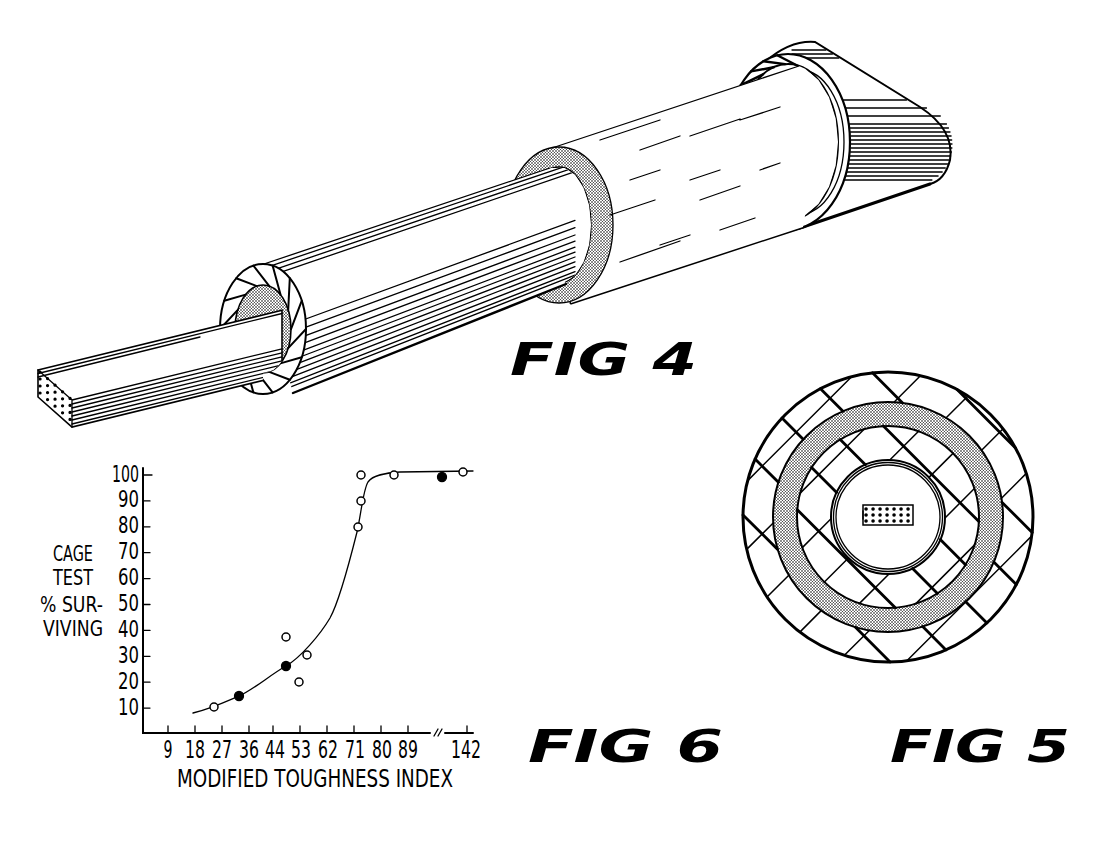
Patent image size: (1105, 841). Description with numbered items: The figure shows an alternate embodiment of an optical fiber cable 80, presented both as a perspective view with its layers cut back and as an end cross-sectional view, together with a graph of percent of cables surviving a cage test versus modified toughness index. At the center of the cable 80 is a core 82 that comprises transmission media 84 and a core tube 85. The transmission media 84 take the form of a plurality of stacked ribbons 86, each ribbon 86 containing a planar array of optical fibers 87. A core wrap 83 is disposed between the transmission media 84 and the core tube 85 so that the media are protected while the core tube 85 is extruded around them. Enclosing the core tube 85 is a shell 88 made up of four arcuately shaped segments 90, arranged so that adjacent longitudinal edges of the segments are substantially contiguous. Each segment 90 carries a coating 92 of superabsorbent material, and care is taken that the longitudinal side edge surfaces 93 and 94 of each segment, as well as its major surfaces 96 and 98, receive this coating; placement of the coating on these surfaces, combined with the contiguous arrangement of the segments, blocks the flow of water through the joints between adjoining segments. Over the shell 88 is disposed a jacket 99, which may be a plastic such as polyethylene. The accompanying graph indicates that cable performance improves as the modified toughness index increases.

In FIG. 4, the cable 80 is at (495, 250).
In FIG. 5, the cable 80 is at (891, 496).
In FIG. 4, the core 82 is at (252, 357).
In FIG. 5, the core 82 is at (875, 517).
In FIG. 4, the core wrap 83 is at (269, 346).
In FIG. 5, the core wrap 83 is at (884, 513).
In FIG. 4, the transmission media 84 is at (160, 359).
In FIG. 5, the transmission media 84 is at (888, 532).
In FIG. 4, the core tube 85 is at (263, 297).
In FIG. 5, the core tube 85 is at (888, 517).
In FIG. 4, the ribbon 86 is at (177, 399).
In FIG. 5, the ribbon 86 is at (889, 497).
In FIG. 4, the optical fibers 87 is at (55, 415).
In FIG. 5, the optical fibers 87 is at (870, 496).
In FIG. 4, the shell 88 is at (761, 172).
In FIG. 5, the shell 88 is at (887, 496).
In FIG. 4, the arcuately shaped segment 90 is at (695, 189).
In FIG. 5, the arcuately shaped segment 90 is at (889, 511).
In FIG. 4, the coating 92 is at (791, 142).
In FIG. 5, the coating 92 is at (863, 517).
In FIG. 4, the longitudinal side edge surface 93 is at (439, 275).
In FIG. 5, the longitudinal side edge surface 93 is at (887, 495).
In FIG. 4, the longitudinal side edge surface 94 is at (563, 238).
In FIG. 5, the longitudinal side edge surface 94 is at (888, 519).
In FIG. 4, the major surface 96 is at (705, 216).
In FIG. 5, the major surface 96 is at (912, 517).
In FIG. 4, the major surface 98 is at (559, 225).
In FIG. 5, the major surface 98 is at (902, 517).
In FIG. 4, the jacket 99 is at (788, 160).
In FIG. 5, the jacket 99 is at (901, 517).